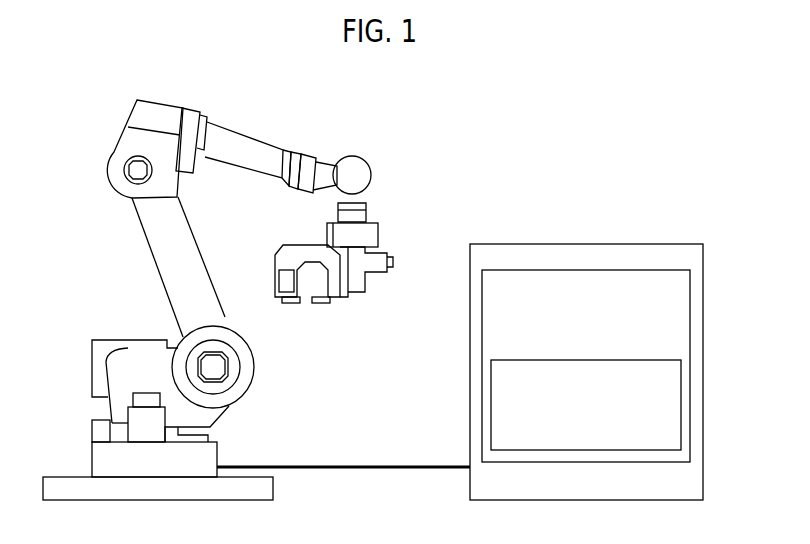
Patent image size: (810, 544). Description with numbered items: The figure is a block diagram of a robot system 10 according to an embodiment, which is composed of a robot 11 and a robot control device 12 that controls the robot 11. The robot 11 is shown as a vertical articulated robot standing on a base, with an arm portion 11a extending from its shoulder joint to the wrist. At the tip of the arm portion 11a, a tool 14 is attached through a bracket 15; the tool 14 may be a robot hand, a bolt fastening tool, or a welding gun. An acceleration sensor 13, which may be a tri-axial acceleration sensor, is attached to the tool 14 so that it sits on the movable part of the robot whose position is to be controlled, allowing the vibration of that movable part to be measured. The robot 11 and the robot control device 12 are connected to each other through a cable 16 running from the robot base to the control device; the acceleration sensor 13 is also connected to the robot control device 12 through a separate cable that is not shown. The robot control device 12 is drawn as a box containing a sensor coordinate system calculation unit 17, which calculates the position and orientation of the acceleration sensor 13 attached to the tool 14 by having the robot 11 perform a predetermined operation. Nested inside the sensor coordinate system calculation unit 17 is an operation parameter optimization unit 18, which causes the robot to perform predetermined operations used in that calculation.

The robot system 10 is at (466, 148).
The robot 11 is at (100, 339).
The arm portion 11a is at (252, 147).
The robot control device 12 is at (704, 472).
The acceleration sensor 13 is at (283, 303).
The tool 14 is at (284, 253).
The bracket 15 is at (380, 234).
The cable 16 is at (365, 465).
The sensor coordinate system calculation unit 17 is at (691, 305).
The operation parameter optimization unit 18 is at (683, 384).